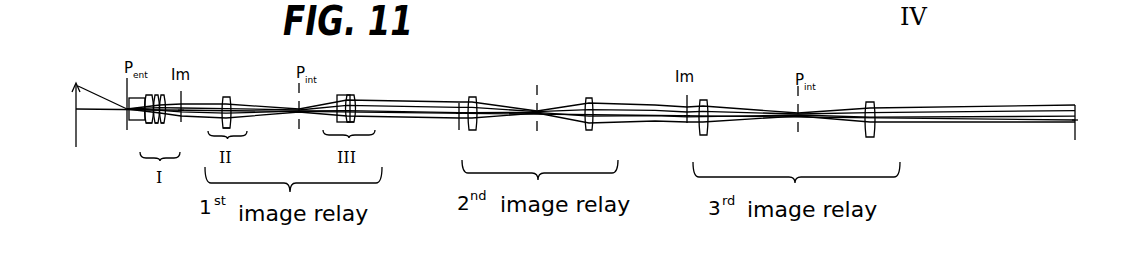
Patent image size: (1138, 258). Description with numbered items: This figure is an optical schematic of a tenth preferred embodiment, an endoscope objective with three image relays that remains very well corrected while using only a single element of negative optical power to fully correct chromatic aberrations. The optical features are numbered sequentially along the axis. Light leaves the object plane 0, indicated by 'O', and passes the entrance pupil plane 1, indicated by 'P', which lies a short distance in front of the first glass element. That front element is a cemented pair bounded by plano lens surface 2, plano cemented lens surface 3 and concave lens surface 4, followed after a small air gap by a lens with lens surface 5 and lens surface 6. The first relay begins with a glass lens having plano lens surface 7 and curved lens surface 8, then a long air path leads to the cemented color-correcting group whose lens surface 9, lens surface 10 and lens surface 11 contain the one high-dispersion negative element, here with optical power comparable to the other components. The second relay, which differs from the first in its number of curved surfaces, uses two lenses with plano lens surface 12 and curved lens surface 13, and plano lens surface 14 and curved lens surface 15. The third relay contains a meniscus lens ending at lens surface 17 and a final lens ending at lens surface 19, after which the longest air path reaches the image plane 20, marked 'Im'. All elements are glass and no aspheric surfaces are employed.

The object plane 0 is at (98, 104).
The entrance pupil plane 1 is at (135, 119).
The lens surface 2 is at (144, 101).
The lens surface 3 is at (147, 134).
The lens surface 4 is at (158, 100).
The lens surface 5 is at (159, 132).
The lens surface 6 is at (168, 130).
The lens surface 7 is at (220, 109).
The lens surface 8 is at (233, 109).
The lens surface 9 is at (336, 104).
The lens surface 10 is at (349, 96).
The lens surface 11 is at (361, 103).
The lens surface 12 is at (457, 114).
The lens surface 13 is at (485, 119).
The lens surface 14 is at (556, 114).
The lens surface 15 is at (601, 109).
The lens surface 17 is at (715, 111).
The lens surface 19 is at (881, 125).
The image plane 20 is at (1080, 113).